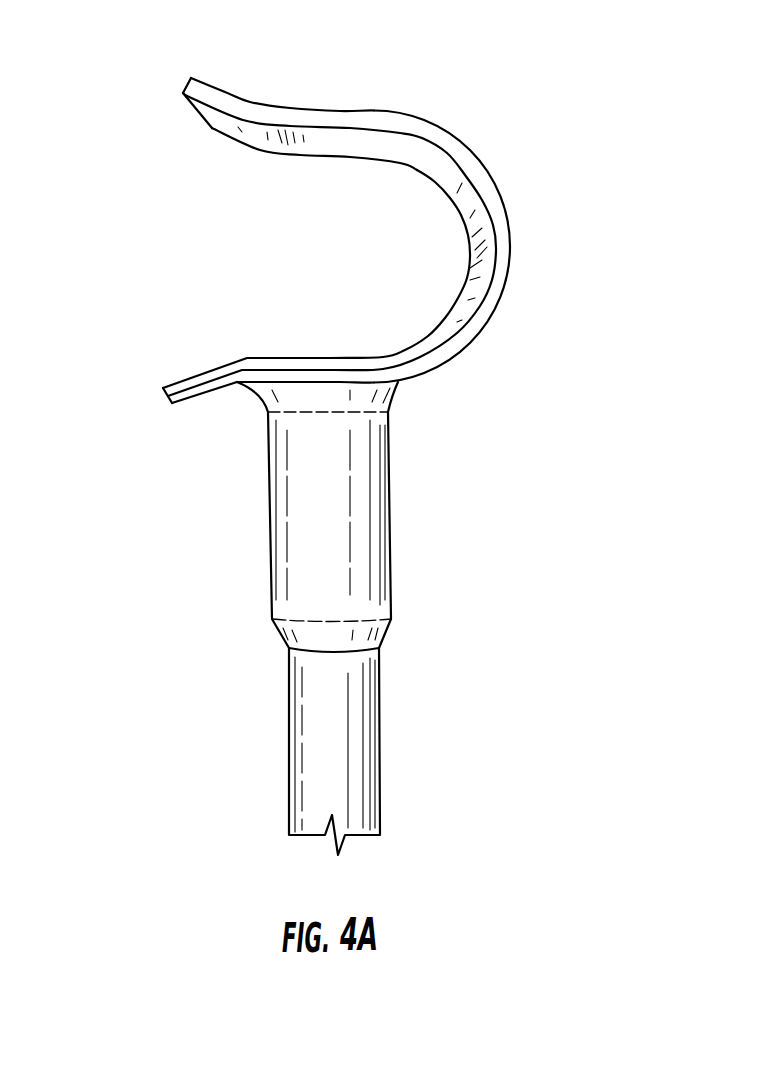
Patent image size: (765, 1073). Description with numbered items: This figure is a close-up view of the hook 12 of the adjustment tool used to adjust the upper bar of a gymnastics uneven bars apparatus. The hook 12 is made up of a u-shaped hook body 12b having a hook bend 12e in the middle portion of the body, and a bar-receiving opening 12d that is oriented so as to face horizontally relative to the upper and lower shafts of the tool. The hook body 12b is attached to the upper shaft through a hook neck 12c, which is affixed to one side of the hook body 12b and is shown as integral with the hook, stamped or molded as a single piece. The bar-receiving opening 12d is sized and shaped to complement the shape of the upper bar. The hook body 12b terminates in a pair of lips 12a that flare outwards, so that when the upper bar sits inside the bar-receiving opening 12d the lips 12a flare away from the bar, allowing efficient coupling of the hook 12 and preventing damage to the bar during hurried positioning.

The hook 12 is at (346, 429).
The lip 12a is at (218, 90).
The hook body member 12b is at (387, 62).
The neck 12c is at (365, 523).
The bar-receiving opening 12d is at (178, 234).
The hook bend 12e is at (503, 245).